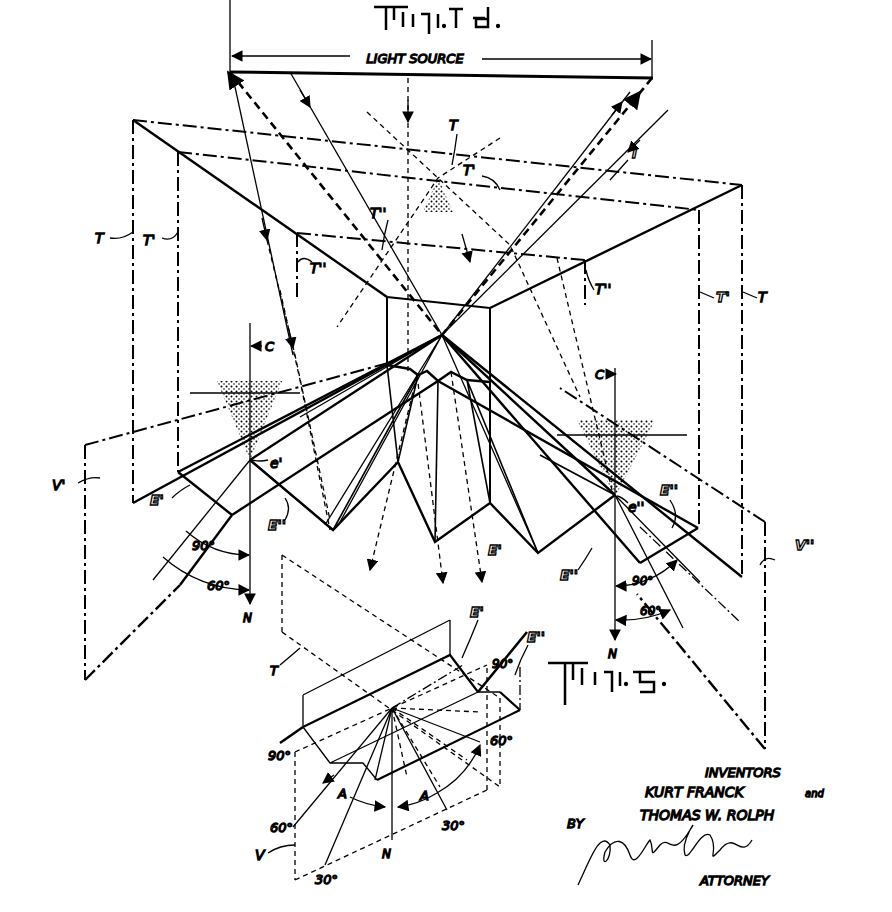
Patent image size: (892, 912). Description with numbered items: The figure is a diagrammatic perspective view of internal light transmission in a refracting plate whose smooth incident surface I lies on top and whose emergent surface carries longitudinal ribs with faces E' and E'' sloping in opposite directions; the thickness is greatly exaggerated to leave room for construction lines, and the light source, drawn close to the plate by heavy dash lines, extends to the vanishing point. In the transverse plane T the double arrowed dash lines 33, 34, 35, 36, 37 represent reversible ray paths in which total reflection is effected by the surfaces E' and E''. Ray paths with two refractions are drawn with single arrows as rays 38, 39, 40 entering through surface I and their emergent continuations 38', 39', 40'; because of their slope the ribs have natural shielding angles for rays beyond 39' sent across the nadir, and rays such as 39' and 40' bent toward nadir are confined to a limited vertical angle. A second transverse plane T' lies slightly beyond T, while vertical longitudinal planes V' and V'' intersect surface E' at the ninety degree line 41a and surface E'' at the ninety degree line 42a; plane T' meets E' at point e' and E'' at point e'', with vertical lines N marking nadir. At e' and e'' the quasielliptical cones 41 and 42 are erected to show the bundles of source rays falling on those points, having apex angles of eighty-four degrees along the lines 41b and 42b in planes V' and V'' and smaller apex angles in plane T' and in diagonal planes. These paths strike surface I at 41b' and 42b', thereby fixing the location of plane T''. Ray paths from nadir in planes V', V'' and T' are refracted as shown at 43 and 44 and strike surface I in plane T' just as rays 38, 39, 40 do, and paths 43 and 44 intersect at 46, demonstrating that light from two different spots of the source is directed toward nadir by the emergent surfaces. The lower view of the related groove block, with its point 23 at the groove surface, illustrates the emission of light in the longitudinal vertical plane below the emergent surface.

In FIG. 5, the point of incidence on groove surface 23 is at (392, 706).
In FIG. 4, the double arrowed dash line 33 is at (575, 140).
In FIG. 4, the double arrowed dash line 34 is at (496, 235).
In FIG. 4, the double arrowed dash line 35 is at (336, 522).
In FIG. 4, the double arrowed dash line 36 is at (295, 340).
In FIG. 5, the double arrowed dash line 36 is at (508, 630).
In FIG. 4, the double arrowed dash line 37 is at (232, 98).
In FIG. 4, the ray 38 is at (567, 206).
In FIG. 4, the ray 39 is at (428, 226).
In FIG. 4, the ray 40 is at (366, 203).
In FIG. 4, the quasielliptical cone 41 is at (236, 378).
In FIG. 4, the quasielliptical cone 42 is at (624, 418).
In FIG. 4, the refracted ray path 43 is at (388, 324).
In FIG. 4, the refracted ray path 44 is at (545, 345).
In FIG. 4, the intersection point 46 is at (440, 176).
In FIG. 4, the 90° line 41a is at (100, 585).
In FIG. 4, the ray path line 41b is at (305, 404).
In FIG. 4, the strike point on surface I 41b' is at (315, 250).
In FIG. 4, the 90° line 42a is at (748, 620).
In FIG. 4, the ray path line 42b is at (590, 374).
In FIG. 4, the strike point on surface I 42b' is at (587, 266).
In FIG. 4, the emergent ray 38' is at (375, 472).
In FIG. 4, the emergent ray 39' is at (417, 481).
In FIG. 4, the emergent ray 40' is at (487, 482).